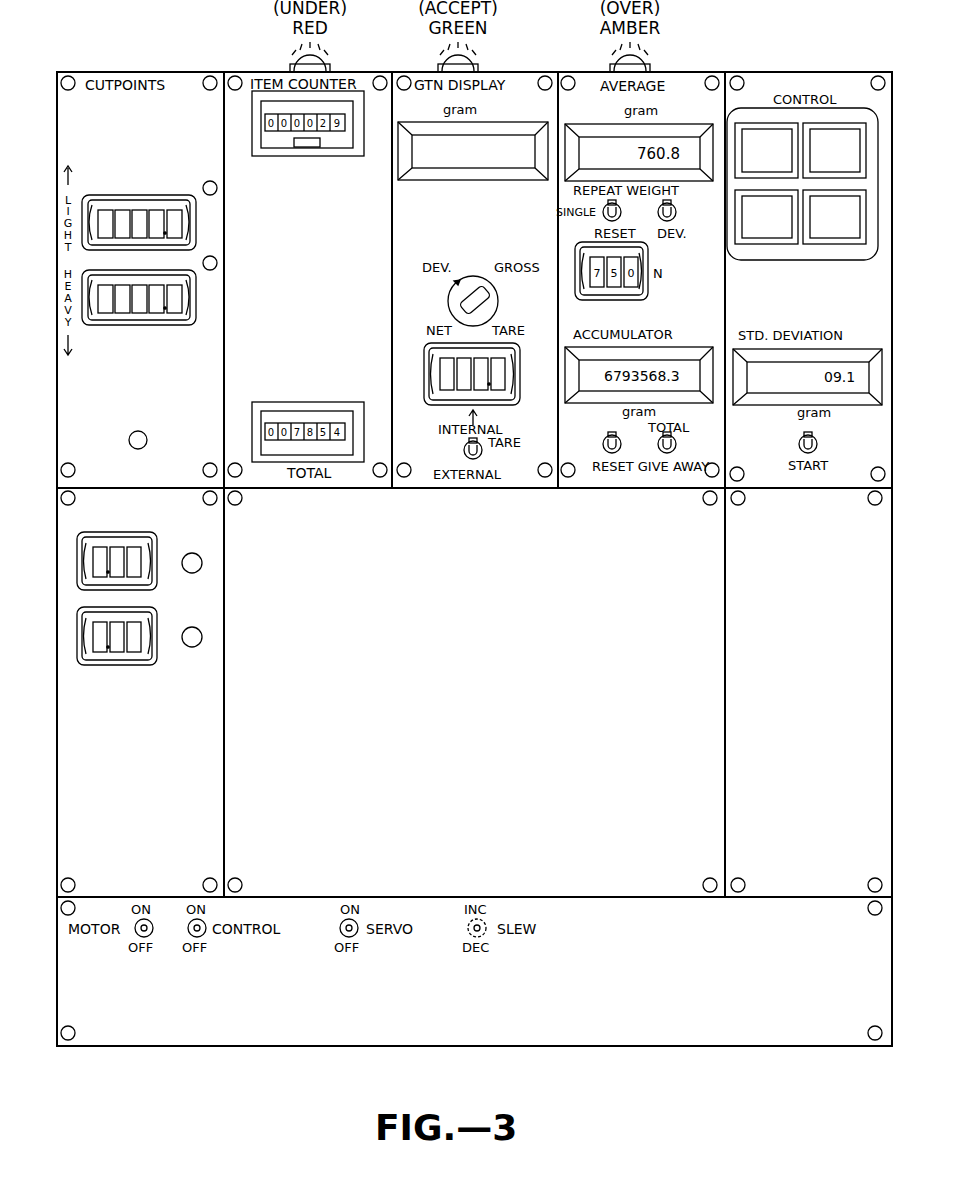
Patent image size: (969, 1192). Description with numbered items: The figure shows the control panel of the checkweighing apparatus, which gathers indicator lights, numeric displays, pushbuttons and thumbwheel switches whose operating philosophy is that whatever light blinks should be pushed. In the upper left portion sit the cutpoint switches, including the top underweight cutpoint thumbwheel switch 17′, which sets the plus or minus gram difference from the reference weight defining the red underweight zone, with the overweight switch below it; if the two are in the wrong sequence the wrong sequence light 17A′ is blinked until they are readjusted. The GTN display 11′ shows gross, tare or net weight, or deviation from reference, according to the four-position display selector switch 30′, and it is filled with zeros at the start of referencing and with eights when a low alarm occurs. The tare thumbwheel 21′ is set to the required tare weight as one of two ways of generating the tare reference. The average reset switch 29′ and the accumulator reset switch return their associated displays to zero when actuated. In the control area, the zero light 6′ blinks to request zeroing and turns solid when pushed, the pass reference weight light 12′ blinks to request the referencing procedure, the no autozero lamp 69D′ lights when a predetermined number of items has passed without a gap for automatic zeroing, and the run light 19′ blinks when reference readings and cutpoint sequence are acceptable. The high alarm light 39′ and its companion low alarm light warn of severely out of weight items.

The underweight cutpoint thumbwheel switch 17′ is at (90, 207).
The wrong sequence light 17A′ is at (134, 436).
The GTN display 11′ is at (484, 173).
The display selector switch 30′ is at (498, 301).
The tare thumbwheel 21′ is at (501, 406).
The average reset switch 29′ is at (620, 214).
The zero light 6′ is at (762, 133).
The pass reference weight light 12′ is at (854, 152).
The no autozero lamp 69D′ is at (760, 237).
The run light 19′ is at (834, 239).
The high alarm light 39′ is at (194, 574).